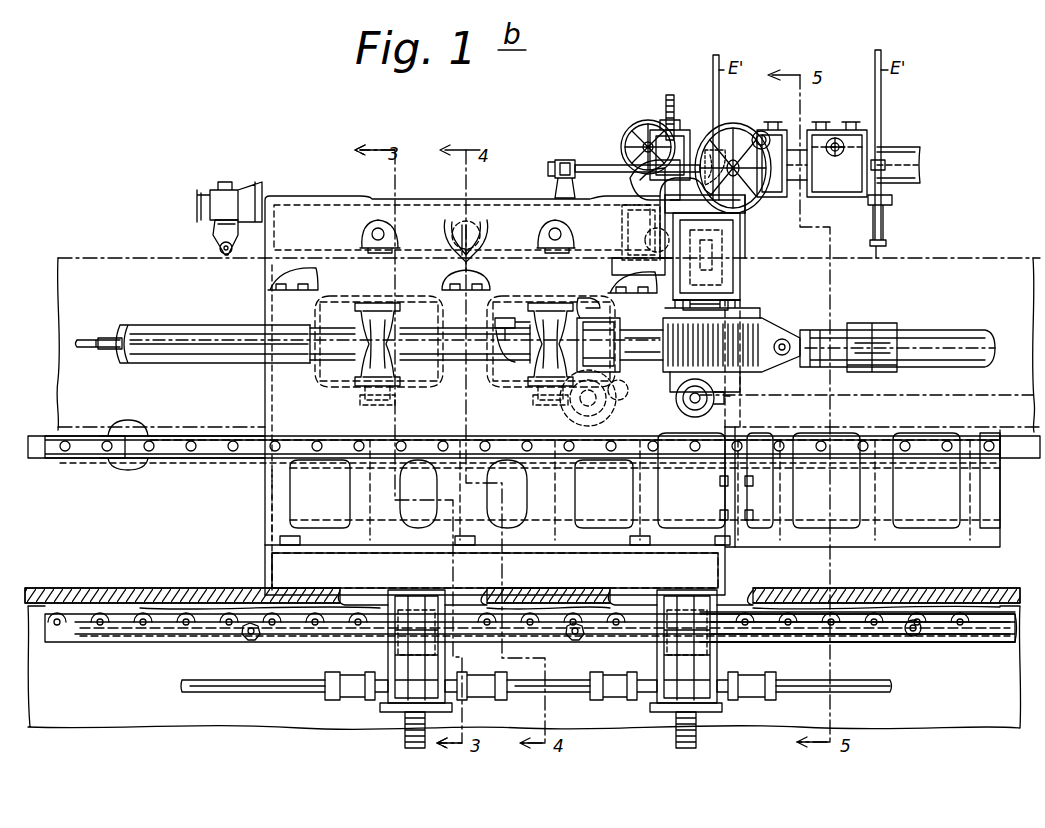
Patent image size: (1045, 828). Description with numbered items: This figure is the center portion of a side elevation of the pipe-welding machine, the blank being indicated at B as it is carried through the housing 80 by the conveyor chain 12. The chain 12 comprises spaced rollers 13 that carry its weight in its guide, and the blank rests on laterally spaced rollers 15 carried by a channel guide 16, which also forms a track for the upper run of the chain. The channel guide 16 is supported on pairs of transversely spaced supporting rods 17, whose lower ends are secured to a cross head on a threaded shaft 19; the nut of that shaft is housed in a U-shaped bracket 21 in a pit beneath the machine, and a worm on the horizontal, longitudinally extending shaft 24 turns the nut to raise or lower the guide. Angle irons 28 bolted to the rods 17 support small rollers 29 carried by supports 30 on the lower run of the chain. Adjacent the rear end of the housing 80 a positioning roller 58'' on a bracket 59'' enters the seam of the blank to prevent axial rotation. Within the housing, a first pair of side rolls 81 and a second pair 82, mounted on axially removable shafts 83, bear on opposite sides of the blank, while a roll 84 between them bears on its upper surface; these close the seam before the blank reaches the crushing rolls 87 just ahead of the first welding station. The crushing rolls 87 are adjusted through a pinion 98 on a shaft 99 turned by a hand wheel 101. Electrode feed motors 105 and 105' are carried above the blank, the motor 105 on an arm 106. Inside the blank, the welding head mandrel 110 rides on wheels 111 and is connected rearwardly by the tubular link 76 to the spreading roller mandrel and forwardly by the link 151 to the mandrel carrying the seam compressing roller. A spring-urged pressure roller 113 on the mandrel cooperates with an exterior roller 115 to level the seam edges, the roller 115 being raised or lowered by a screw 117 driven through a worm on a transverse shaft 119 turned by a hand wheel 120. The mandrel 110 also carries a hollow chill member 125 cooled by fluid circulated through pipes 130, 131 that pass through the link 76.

The section B of machine B is at (96, 264).
The chain 12 is at (36, 455).
The spaced rollers 13 is at (190, 458).
The rollers 15 is at (128, 462).
The channel guide 16 is at (86, 460).
The supporting rods 17 is at (345, 513).
The threaded shaft 19 is at (405, 720).
The U-shaped bracket 21 is at (395, 663).
The shaft 24 is at (266, 686).
The angle irons 28 is at (928, 642).
The small rollers 29 is at (255, 635).
The supports 30 is at (233, 640).
The positioning roller 58'' is at (203, 237).
The bracket 59'' is at (233, 186).
The tubular connecting member 76 is at (236, 360).
The housing 80 is at (498, 205).
The first pair of rolls 81 is at (365, 378).
The second pair of rolls 82 is at (545, 378).
The shafts 83 is at (355, 281).
The roll 84 is at (486, 248).
The crushing rolls 87 is at (732, 236).
The pinion 98 is at (562, 162).
The shaft 99 is at (602, 165).
The hand wheel 101 is at (717, 130).
The feed motor 105 is at (777, 174).
The feed motor 105' is at (837, 174).
The arm 106 is at (905, 155).
The welding head mandrel 110 is at (730, 368).
The wheels 111 is at (716, 400).
The pressure roller 113 is at (645, 255).
The roller 115 is at (645, 242).
The screw 117 is at (665, 97).
The shaft 119 is at (622, 130).
The hand wheel 120 is at (650, 120).
The chill member 125 is at (742, 289).
The pipe 130 is at (86, 348).
The pipe 131 is at (100, 350).
The connecting member 151 is at (965, 358).